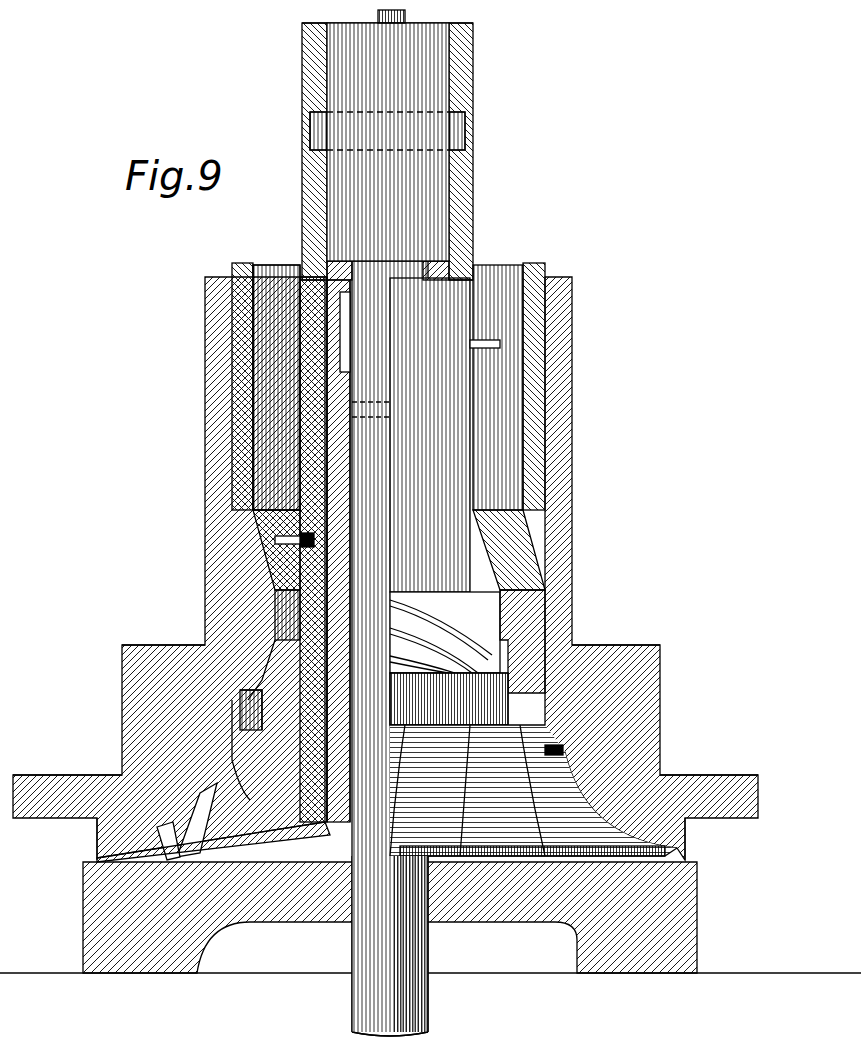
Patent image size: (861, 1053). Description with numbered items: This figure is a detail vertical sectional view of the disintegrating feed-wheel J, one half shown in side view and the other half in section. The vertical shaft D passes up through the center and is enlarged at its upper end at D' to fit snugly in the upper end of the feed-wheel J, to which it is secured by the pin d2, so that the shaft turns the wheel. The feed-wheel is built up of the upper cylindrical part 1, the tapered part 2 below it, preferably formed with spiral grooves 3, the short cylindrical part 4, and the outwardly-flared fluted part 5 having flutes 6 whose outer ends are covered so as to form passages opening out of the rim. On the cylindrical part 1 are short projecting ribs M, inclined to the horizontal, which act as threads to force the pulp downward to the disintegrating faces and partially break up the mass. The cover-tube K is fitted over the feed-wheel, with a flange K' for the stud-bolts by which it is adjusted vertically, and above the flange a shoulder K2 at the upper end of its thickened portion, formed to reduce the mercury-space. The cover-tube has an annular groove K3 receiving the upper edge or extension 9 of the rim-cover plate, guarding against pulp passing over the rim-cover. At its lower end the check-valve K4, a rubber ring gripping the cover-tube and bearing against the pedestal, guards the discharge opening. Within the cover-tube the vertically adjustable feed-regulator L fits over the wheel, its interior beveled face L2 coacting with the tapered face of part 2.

The vertical shaft D is at (390, 646).
The enlarged portion of shaft D' is at (388, 135).
The pin d2 is at (478, 130).
The disintegrating feed-wheel J is at (397, 151).
The cover-tube K is at (385, 568).
The shoulder of cover-tube K2 is at (391, 632).
The flange of cover-tube K' is at (401, 765).
The annular groove of cover-tube K3 is at (225, 758).
The check-valve K4 is at (95, 838).
The feed-regulator L is at (540, 257).
The interior beveled face of regulator L2 is at (512, 670).
The projecting ribs M is at (195, 540).
The upper cylindrical part 1 is at (331, 357).
The tapered part 2 is at (280, 626).
The spiral grooves 3 is at (445, 632).
The short cylindrical part 4 is at (259, 710).
The outwardly-flared fluted part 5 is at (240, 752).
The flutes 6 is at (580, 856).
The upper edge of rim-cover plate 9 is at (210, 752).